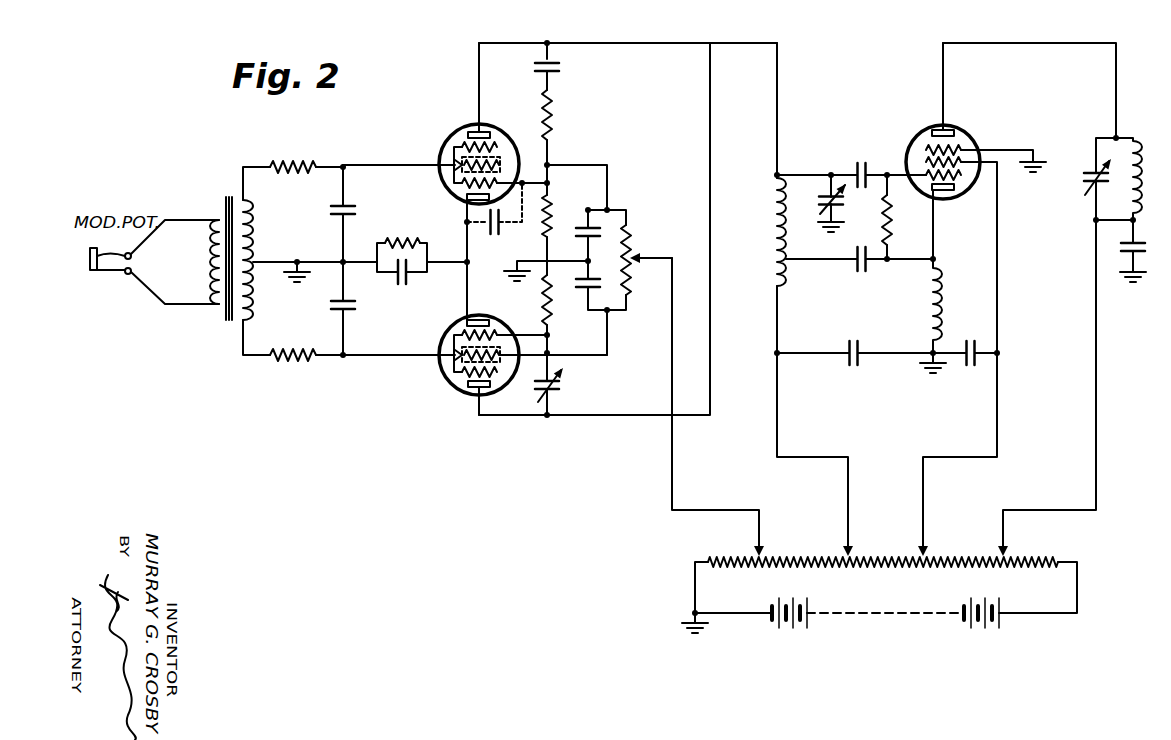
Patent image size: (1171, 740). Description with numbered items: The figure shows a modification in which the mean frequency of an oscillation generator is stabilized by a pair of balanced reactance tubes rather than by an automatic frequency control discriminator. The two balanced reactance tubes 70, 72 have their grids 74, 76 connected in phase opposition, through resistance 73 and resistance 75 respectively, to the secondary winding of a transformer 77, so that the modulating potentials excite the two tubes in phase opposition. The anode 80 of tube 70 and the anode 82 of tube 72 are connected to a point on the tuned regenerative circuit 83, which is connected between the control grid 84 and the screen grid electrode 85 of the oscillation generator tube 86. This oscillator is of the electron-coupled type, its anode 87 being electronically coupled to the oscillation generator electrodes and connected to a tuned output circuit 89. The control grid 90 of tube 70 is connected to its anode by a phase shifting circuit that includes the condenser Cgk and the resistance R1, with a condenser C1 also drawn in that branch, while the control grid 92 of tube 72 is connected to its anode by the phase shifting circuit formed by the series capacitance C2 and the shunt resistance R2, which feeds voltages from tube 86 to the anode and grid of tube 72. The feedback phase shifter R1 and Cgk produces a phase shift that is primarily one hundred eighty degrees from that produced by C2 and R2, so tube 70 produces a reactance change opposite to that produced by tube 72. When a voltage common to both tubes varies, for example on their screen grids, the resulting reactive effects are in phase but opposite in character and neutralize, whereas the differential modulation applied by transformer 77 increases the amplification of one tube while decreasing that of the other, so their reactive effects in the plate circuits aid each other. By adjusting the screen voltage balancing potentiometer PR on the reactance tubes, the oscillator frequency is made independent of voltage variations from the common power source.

The balanced reactance tube 70 is at (462, 126).
The balanced reactance tube 72 is at (451, 389).
The resistance 73 is at (300, 163).
The grid 74 is at (455, 153).
The resistance 75 is at (290, 361).
The grid 76 is at (455, 359).
The transformer 77 is at (222, 206).
The anode 80 is at (493, 131).
The anode 82 is at (490, 387).
The tuned regenerative circuit 83 is at (873, 217).
The control grid 84 is at (957, 188).
The screen grid electrode 85 is at (926, 172).
The oscillation generator tube 86 is at (931, 130).
The anode 87 is at (962, 137).
The tuned output circuit 89 is at (1121, 147).
The control grid 90 is at (455, 194).
The control grid 92 is at (498, 334).
The condenser C1 is at (559, 69).
The series capacitance C2 is at (560, 386).
The resistance R1 is at (553, 112).
The shunt resistance R2 is at (552, 300).
The screen voltage balancing potentiometer PR is at (632, 240).
The condenser Cgk is at (492, 230).